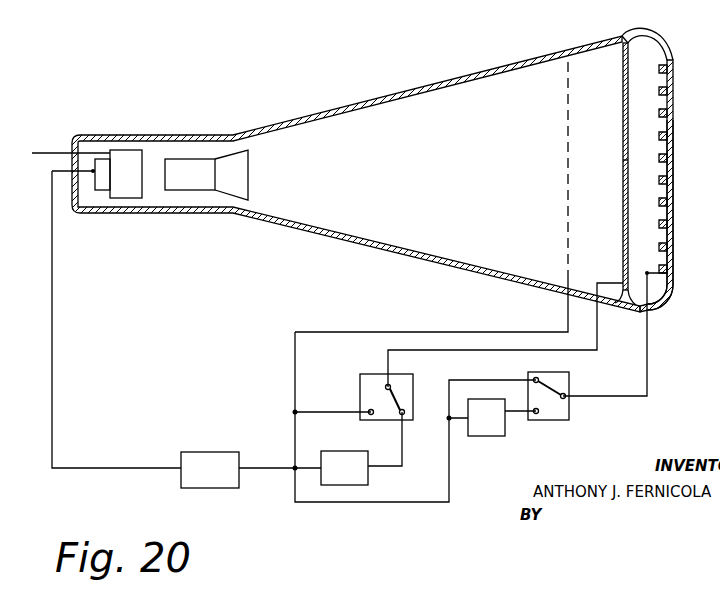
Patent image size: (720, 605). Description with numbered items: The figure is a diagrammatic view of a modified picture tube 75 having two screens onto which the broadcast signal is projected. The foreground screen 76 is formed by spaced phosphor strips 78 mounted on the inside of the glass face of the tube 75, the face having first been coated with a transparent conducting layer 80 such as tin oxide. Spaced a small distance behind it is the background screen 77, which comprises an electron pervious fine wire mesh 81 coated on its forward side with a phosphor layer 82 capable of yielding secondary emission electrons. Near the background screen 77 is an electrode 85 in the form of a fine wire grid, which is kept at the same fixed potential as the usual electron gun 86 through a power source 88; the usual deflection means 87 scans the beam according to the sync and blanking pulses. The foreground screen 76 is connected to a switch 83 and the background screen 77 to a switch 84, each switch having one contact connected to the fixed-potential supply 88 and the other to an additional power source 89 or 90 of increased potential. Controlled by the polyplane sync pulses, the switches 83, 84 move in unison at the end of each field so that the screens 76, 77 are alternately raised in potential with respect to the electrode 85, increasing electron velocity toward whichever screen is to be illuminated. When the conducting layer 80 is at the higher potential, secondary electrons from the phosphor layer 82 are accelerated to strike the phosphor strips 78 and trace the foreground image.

The tube 75 is at (428, 256).
The foreground screen 76 is at (674, 58).
The background screen 77 is at (645, 33).
The phosphor strips 78 is at (659, 113).
The transparent conducting layer 80 is at (674, 165).
The fine wire mesh 81 is at (622, 140).
The phosphor layer 82 is at (628, 165).
The switch 83 is at (570, 410).
The switch 84 is at (366, 382).
The electrode 85 is at (567, 157).
The electron gun 86 is at (116, 198).
The deflection means 87 is at (186, 190).
The power source 88 is at (220, 480).
The power source 89 is at (483, 437).
The power source 90 is at (362, 476).